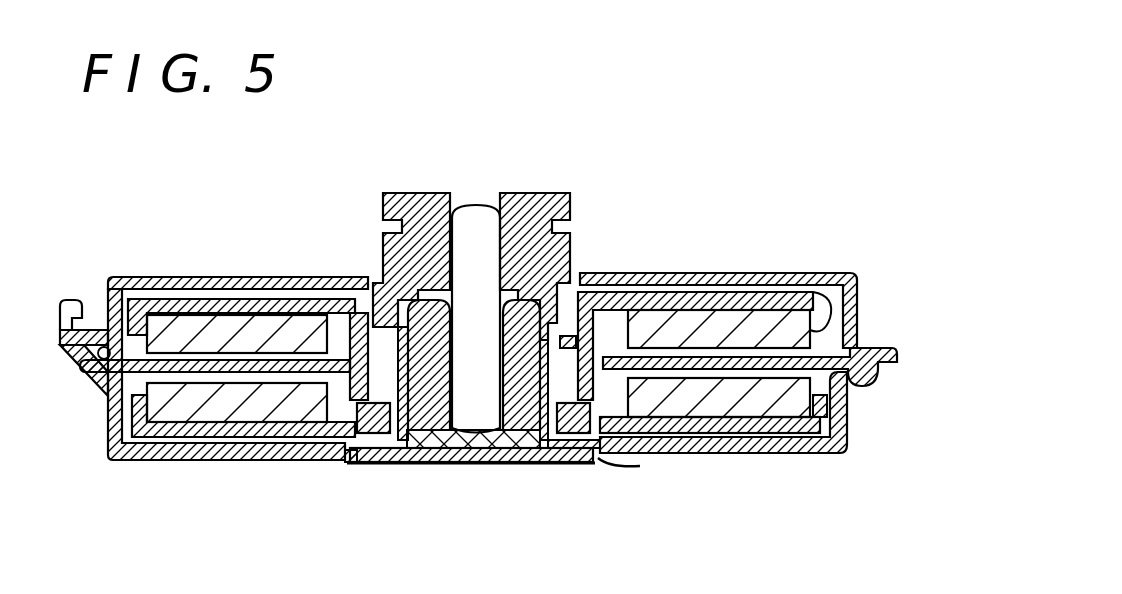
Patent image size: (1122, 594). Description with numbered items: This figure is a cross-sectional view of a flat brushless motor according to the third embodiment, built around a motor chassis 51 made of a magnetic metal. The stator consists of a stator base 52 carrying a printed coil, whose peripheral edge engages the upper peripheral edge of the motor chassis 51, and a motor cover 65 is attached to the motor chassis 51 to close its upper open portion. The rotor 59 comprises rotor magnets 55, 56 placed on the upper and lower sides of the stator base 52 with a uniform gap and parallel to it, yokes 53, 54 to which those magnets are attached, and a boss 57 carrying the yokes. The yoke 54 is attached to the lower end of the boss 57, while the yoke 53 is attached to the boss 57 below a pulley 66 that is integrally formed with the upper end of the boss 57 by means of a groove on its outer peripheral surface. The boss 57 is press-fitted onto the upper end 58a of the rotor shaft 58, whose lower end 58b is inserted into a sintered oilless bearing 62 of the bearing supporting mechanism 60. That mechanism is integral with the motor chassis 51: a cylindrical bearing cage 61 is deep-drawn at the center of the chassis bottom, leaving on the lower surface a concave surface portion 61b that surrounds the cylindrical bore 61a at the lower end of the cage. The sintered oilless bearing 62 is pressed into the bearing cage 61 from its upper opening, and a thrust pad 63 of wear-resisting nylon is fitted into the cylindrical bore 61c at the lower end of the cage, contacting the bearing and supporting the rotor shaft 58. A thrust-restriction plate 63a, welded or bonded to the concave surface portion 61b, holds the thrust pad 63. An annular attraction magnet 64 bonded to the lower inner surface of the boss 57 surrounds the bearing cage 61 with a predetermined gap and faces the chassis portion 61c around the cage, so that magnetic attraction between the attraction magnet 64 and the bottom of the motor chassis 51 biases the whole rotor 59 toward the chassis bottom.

The motor chassis 51 is at (130, 460).
The stator base 52 is at (787, 358).
The yoke 53 is at (712, 302).
The yoke 54 is at (802, 455).
The rotor magnet 55 is at (183, 328).
The rotor magnet 56 is at (208, 410).
The boss 57 is at (530, 206).
The rotor shaft 58 is at (473, 206).
The upper end of rotor shaft 58a is at (455, 246).
The lower end of rotor shaft 58b is at (437, 460).
The rotor 59 is at (128, 294).
The bearing supporting mechanism 60 is at (562, 342).
The bearing cage 61 is at (600, 461).
The cylindrical bore 61a is at (533, 440).
The concave surface portion 61b is at (608, 463).
The cylindrical bore 61c is at (593, 441).
The sintered oilless bearing 62 is at (515, 426).
The thrust pad 63 is at (477, 463).
The thrust-restriction plate 63a is at (380, 462).
The annular attraction magnet 64 is at (353, 462).
The motor cover 65 is at (242, 278).
The pulley 66 is at (385, 218).